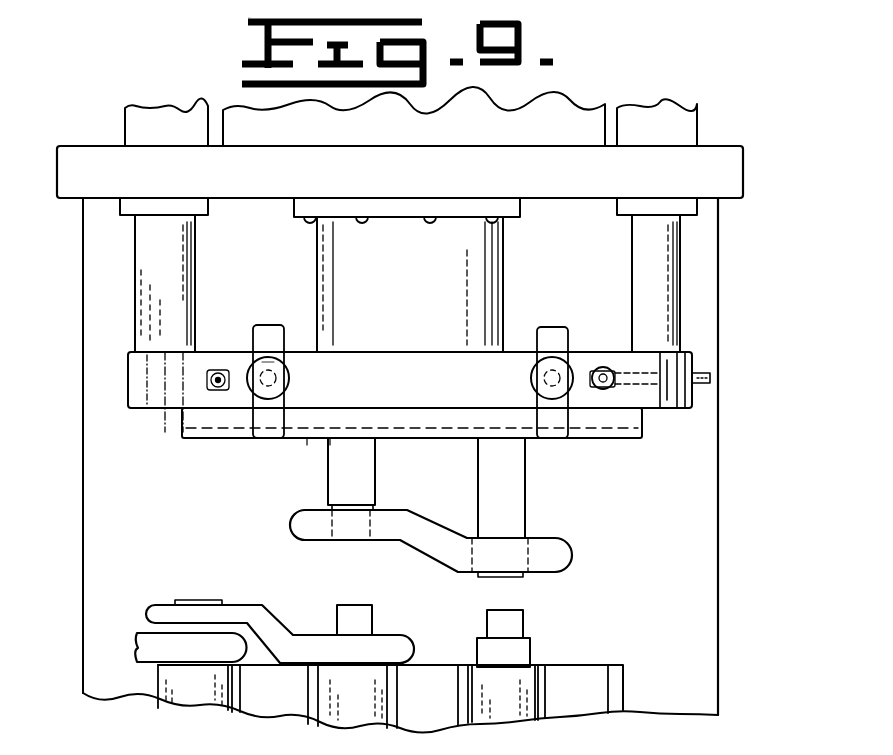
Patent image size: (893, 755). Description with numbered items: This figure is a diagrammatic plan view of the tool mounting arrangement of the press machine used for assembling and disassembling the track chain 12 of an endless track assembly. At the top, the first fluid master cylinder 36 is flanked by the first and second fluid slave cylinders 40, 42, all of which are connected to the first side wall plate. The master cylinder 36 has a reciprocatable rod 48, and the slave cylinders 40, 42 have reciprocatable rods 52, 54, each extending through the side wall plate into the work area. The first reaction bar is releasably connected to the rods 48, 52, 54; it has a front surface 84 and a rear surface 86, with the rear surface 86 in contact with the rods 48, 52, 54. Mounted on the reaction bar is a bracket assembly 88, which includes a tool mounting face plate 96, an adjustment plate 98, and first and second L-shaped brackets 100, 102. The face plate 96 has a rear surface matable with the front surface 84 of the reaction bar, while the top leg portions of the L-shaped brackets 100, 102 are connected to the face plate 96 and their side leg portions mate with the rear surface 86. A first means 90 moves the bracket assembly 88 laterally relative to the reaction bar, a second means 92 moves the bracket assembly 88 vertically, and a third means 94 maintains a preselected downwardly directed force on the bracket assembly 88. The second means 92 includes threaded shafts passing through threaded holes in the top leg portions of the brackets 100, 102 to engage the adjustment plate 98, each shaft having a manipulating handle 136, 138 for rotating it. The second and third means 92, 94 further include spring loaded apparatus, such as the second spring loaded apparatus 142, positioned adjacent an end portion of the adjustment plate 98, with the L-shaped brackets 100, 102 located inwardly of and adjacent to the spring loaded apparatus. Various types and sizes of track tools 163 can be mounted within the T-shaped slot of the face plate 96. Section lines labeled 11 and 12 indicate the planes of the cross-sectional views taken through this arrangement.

The section line 11- 11 is at (572, 480).
The track chain 12 is at (138, 612).
The first fluid master cylinder 36 is at (460, 133).
The first fluid slave cylinder 40 is at (688, 112).
The second fluid slave cylinder 42 is at (133, 122).
The reciprocatable rod 48 is at (416, 270).
The reciprocatable rod 52 is at (668, 243).
The reciprocatable rod 54 is at (140, 243).
The front surface 84 is at (310, 412).
The rear surface 86 is at (210, 352).
The bracket assembly 88 is at (246, 448).
The first means for moving the bracket assembly laterally 90 is at (660, 340).
The second means for moving the bracket assembly vertically 92 is at (528, 365).
The third means for maintaining a downwardly directed force 94 is at (616, 392).
The tool mounting face plate 96 is at (308, 440).
The adjustment plate 98 is at (439, 383).
The first L-shaped bracket 100 is at (543, 414).
The second L-shaped bracket 102 is at (277, 339).
The manipulating handle 136 is at (531, 378).
The manipulating handle 138 is at (258, 388).
The second spring loaded apparatus 142 is at (186, 375).
The track tools 163 is at (368, 487).